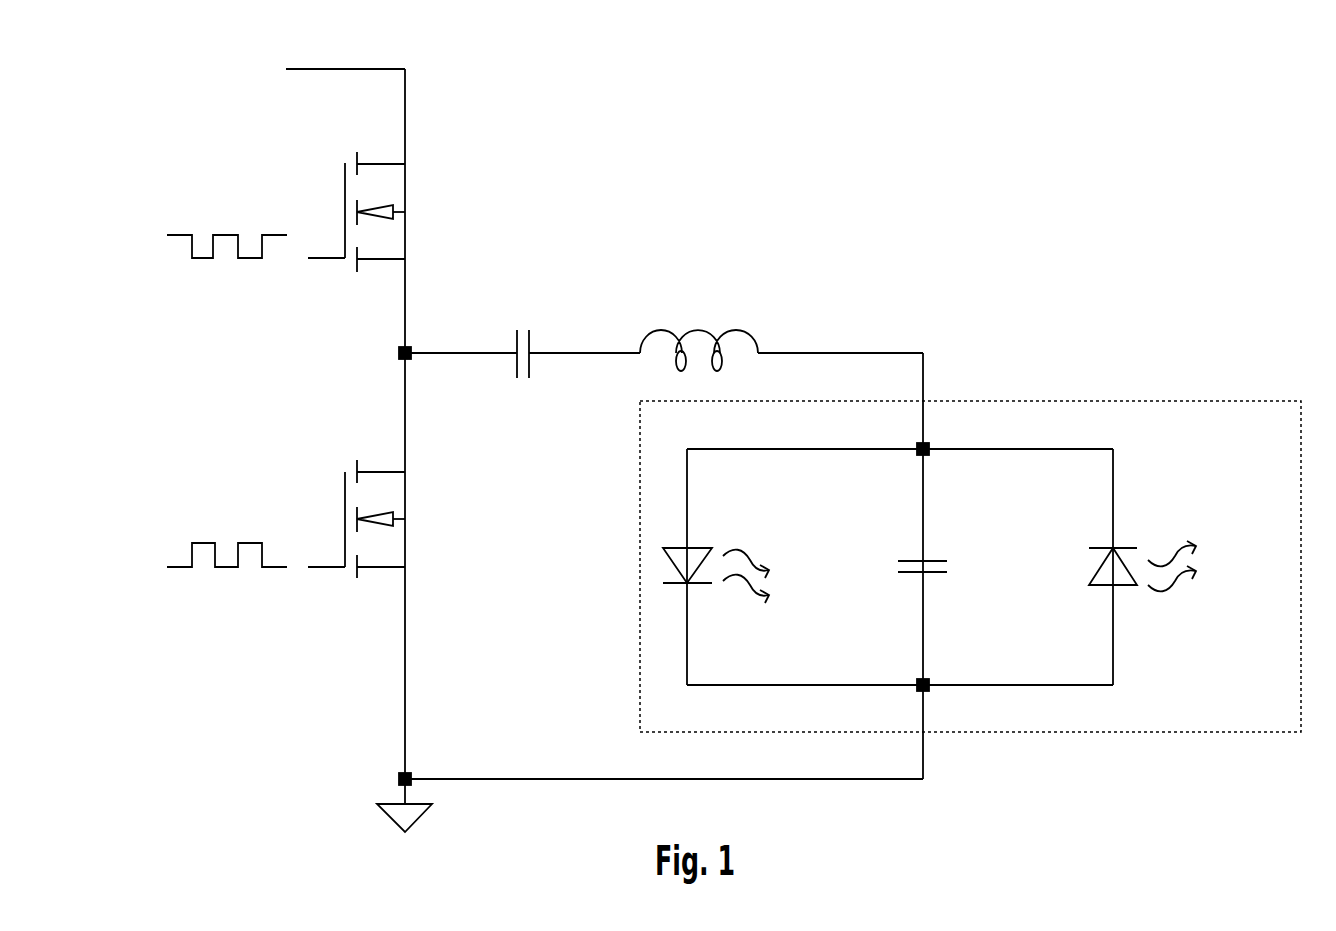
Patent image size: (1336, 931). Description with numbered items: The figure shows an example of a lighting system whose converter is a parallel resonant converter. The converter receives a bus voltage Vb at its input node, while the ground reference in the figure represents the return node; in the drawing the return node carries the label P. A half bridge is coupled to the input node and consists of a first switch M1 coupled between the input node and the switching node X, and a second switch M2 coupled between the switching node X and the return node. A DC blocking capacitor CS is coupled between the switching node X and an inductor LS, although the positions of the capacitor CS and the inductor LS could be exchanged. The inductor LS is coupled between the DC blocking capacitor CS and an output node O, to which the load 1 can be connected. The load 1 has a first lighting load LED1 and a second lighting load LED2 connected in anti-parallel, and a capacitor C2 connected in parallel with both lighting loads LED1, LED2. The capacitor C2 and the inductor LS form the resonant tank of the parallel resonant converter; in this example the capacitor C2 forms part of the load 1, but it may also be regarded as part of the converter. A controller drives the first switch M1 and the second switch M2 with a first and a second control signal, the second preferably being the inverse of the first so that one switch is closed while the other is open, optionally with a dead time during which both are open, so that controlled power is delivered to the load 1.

The bus voltage Vb is at (298, 71).
The first switch M1 is at (328, 212).
The second switch M2 is at (331, 519).
The switching node X is at (384, 354).
The DC blocking capacitor CS is at (521, 319).
The inductor LS is at (699, 316).
The output node O is at (887, 317).
The return node P is at (955, 779).
The load 1 is at (970, 531).
The first lighting load LED1 is at (750, 567).
The capacitor C2 is at (952, 534).
The second lighting load LED2 is at (1178, 567).